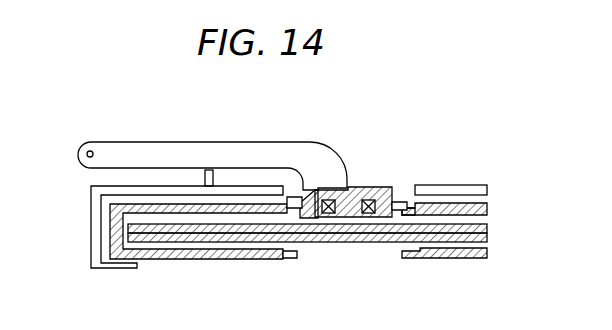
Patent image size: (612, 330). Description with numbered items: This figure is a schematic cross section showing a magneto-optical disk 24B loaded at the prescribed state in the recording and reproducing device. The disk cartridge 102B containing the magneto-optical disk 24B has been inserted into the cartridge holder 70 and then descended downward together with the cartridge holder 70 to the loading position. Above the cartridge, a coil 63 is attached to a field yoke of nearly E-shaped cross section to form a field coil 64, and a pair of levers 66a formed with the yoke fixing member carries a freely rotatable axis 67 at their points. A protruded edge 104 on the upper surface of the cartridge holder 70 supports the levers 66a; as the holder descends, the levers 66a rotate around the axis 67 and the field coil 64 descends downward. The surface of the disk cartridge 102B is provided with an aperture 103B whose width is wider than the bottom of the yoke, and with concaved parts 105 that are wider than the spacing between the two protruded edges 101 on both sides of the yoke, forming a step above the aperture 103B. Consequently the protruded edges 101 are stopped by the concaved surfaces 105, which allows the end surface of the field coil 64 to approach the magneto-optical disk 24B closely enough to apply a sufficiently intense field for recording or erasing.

The cartridge holder 70 is at (91, 260).
The disk cartridge 102B is at (218, 262).
The aperture 103B is at (312, 225).
The magneto-optical disk 24B is at (385, 243).
The concaved part 105 is at (289, 261).
The lever 66a is at (233, 153).
The axis 67 is at (90, 150).
The protruded edge 104 is at (205, 181).
The coil 63 is at (330, 192).
The field coil 64 is at (386, 180).
The protruded edge 101 is at (292, 195).